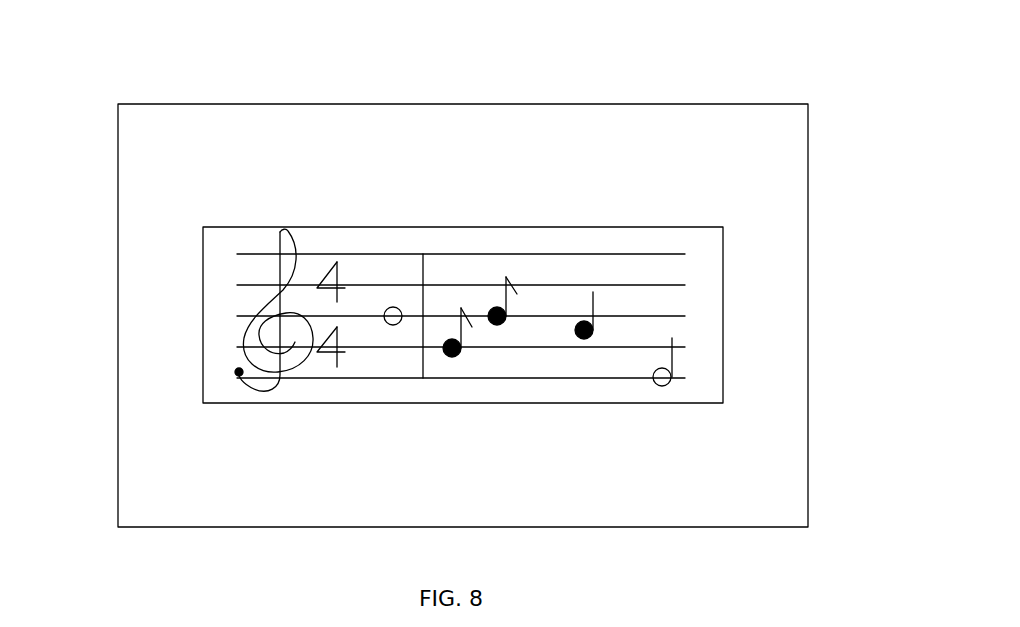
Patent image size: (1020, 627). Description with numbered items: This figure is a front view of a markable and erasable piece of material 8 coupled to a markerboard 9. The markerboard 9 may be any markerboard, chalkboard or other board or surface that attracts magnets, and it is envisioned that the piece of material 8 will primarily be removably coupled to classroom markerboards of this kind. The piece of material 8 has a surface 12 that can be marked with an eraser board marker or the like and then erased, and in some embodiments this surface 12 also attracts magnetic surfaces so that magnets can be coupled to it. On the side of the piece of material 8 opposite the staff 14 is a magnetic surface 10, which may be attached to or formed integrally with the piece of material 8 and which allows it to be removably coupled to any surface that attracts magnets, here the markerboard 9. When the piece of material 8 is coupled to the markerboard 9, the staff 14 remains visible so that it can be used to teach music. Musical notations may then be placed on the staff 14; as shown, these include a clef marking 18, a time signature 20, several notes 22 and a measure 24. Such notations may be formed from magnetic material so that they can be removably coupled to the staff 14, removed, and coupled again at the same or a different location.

The markable and erasable piece of material 8 is at (730, 219).
The markerboard 9 is at (118, 104).
The magnetic surface 10 is at (732, 298).
The surface 12 is at (217, 380).
The staff 14 is at (694, 391).
The clef marking 18 is at (260, 302).
The time signature 20 is at (347, 263).
The notes 22 is at (398, 300).
The measure 24 is at (423, 380).